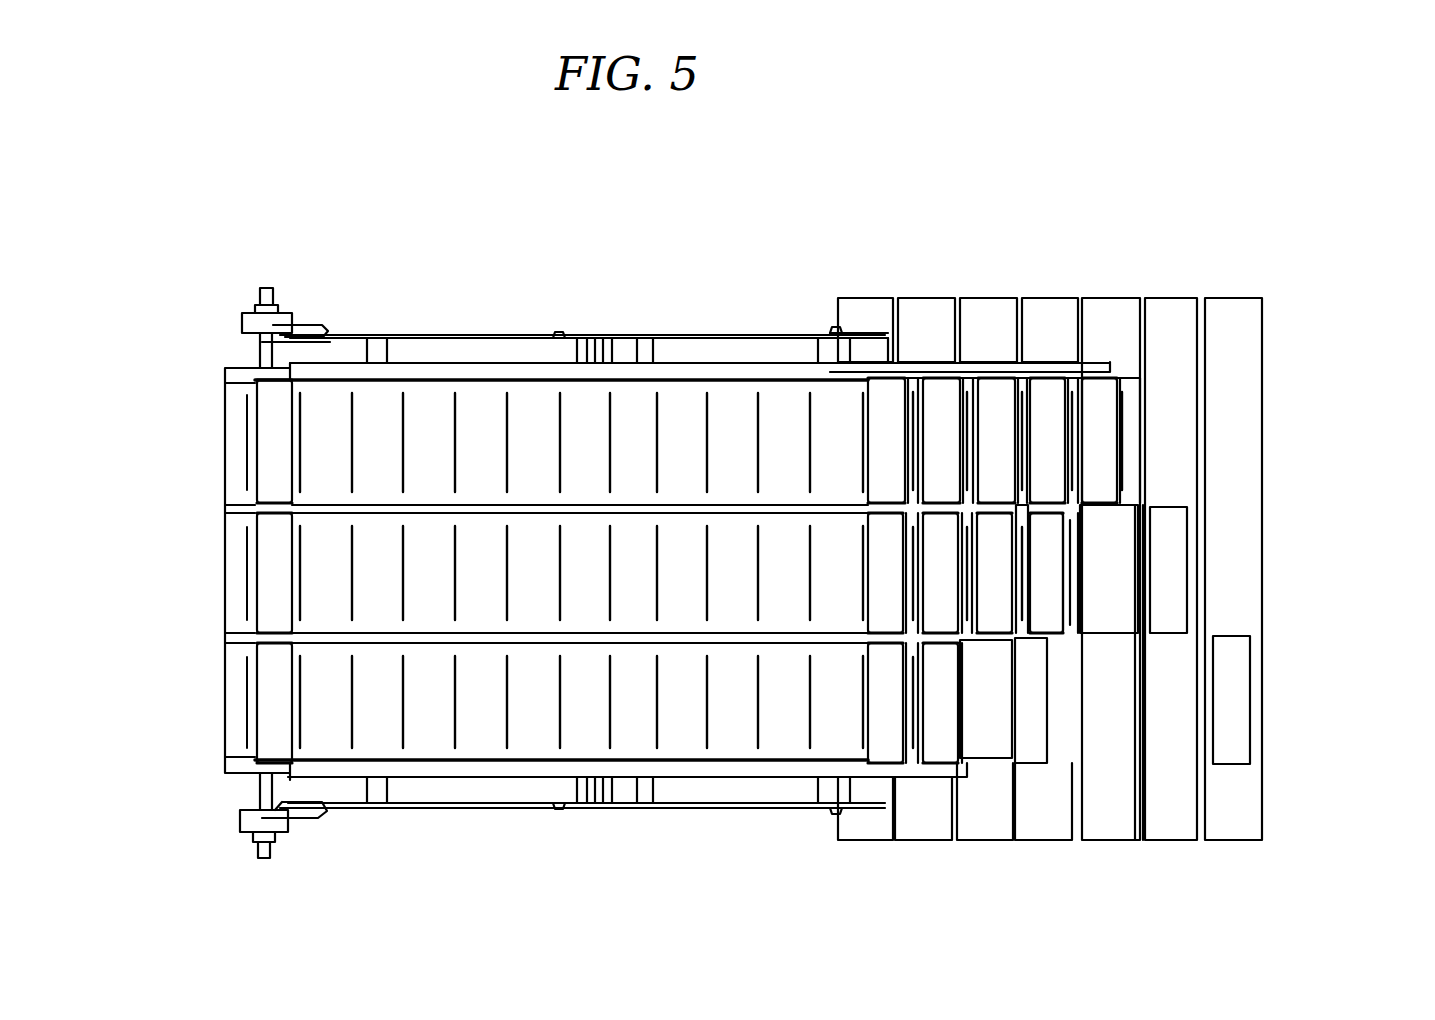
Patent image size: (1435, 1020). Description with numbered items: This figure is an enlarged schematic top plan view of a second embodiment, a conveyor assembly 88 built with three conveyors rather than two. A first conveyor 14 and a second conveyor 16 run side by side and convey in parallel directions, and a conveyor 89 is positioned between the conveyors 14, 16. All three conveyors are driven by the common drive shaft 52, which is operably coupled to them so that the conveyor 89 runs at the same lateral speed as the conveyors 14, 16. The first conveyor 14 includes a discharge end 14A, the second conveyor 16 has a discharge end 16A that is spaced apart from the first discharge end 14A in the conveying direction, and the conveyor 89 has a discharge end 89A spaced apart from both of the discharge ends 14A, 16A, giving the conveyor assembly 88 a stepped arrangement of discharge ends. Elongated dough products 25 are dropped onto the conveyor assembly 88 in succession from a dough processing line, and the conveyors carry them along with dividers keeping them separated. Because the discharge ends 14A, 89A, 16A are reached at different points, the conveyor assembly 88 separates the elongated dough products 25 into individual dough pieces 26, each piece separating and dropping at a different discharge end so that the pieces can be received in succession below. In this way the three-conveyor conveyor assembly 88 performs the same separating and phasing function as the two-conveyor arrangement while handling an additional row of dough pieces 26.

The first conveyor 14 is at (547, 778).
The discharge end of first conveyor 14A is at (990, 776).
The second conveyor 16 is at (683, 362).
The discharge end of second conveyor 16A is at (1158, 362).
The elongated dough products 25 is at (234, 358).
The individual dough pieces 26 is at (1240, 606).
The common drive shaft 52 is at (255, 793).
The conveyor assembly 88 is at (403, 272).
The conveyor 89 is at (479, 513).
The discharge end of conveyor 89A is at (1092, 518).